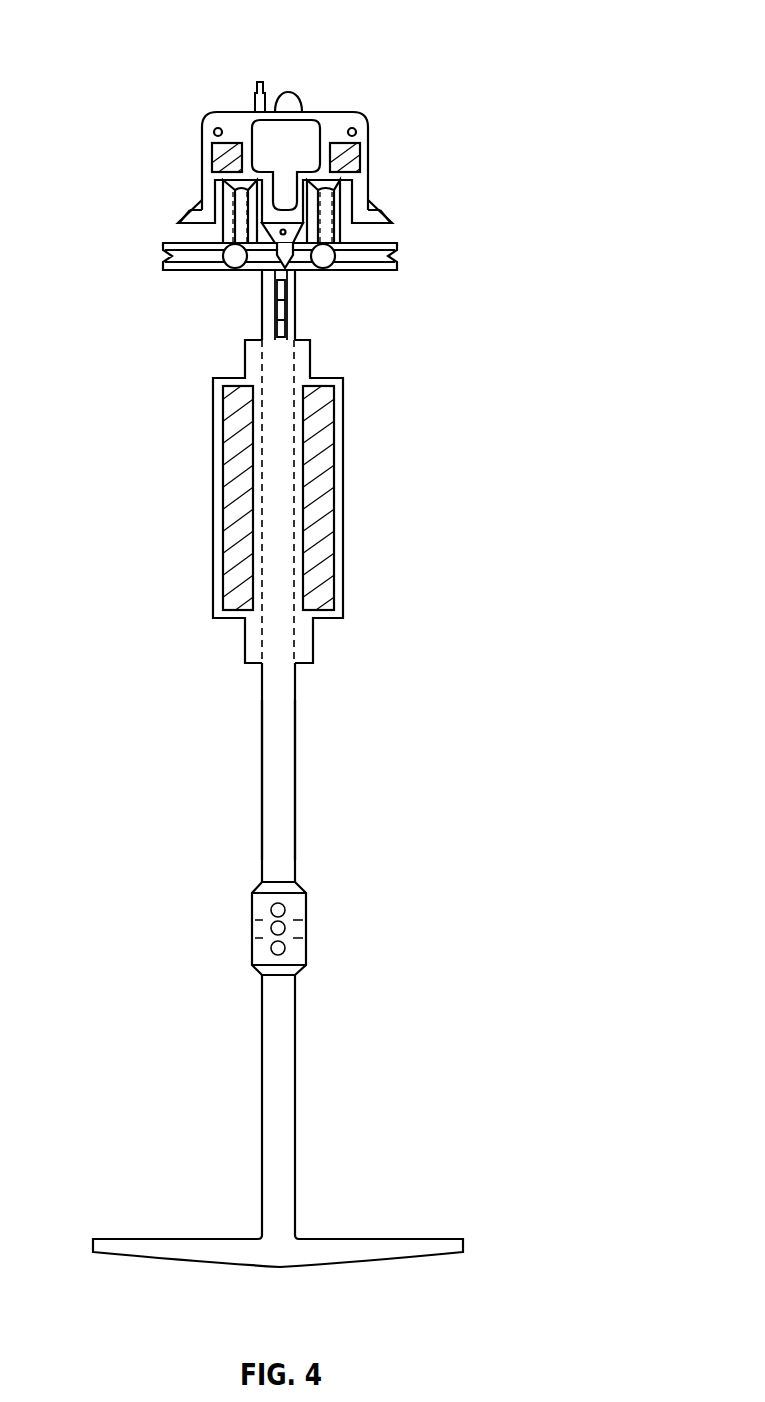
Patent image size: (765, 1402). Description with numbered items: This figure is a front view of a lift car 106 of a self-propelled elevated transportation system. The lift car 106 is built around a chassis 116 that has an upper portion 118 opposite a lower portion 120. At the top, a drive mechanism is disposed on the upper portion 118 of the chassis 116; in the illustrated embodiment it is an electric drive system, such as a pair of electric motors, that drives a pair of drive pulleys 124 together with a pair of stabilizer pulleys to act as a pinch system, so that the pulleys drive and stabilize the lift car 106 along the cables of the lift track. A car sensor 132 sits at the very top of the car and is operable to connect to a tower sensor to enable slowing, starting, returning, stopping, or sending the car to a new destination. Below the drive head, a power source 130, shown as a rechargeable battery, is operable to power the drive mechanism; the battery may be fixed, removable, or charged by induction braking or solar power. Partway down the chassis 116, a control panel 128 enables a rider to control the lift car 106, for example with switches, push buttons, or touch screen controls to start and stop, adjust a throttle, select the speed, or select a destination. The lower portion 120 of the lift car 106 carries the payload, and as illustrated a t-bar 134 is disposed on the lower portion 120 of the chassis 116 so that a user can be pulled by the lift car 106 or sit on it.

The lift car 106 is at (297, 788).
The chassis 116 is at (277, 740).
The upper portion 118 is at (268, 300).
The lower portion 120 is at (322, 112).
The drive pulleys 124 is at (167, 265).
The control panel 128 is at (250, 928).
The power source 130 is at (327, 517).
The car sensor 132 is at (258, 80).
The t-bar 134 is at (190, 1250).